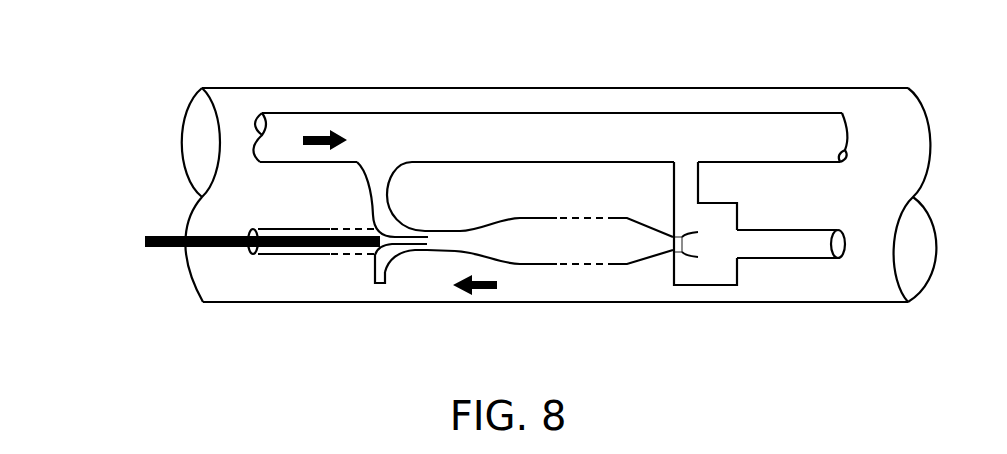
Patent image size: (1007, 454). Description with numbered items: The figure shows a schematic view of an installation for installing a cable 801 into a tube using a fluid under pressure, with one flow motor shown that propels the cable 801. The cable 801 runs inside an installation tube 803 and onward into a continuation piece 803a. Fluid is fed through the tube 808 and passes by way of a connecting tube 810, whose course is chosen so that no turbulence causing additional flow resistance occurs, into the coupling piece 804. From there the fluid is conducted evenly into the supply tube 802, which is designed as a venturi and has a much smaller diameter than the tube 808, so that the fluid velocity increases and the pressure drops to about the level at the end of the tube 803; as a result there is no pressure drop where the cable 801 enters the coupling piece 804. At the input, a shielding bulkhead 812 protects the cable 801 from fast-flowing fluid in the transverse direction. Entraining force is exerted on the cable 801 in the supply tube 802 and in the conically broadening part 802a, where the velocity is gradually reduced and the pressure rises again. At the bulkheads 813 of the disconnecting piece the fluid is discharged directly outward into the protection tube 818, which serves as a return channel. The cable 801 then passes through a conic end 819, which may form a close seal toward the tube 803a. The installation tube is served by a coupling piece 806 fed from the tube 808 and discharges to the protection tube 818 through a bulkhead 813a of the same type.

The cable 801 is at (183, 237).
The supply tube 802 is at (433, 232).
The conically broadening part of the supply tube 802a is at (527, 218).
The tube 803 is at (272, 257).
The continuation piece of the installation tube 803a is at (793, 257).
The coupling piece 804 is at (383, 285).
The coupling piece 806 is at (725, 203).
The tube 808 is at (348, 113).
The connecting tube 810 is at (370, 198).
The shielding bulkhead 812 is at (410, 250).
The bulkheads 813 is at (600, 265).
The bulkhead 813a is at (353, 257).
The protection tube 818 is at (638, 88).
The conic end 819 is at (640, 230).